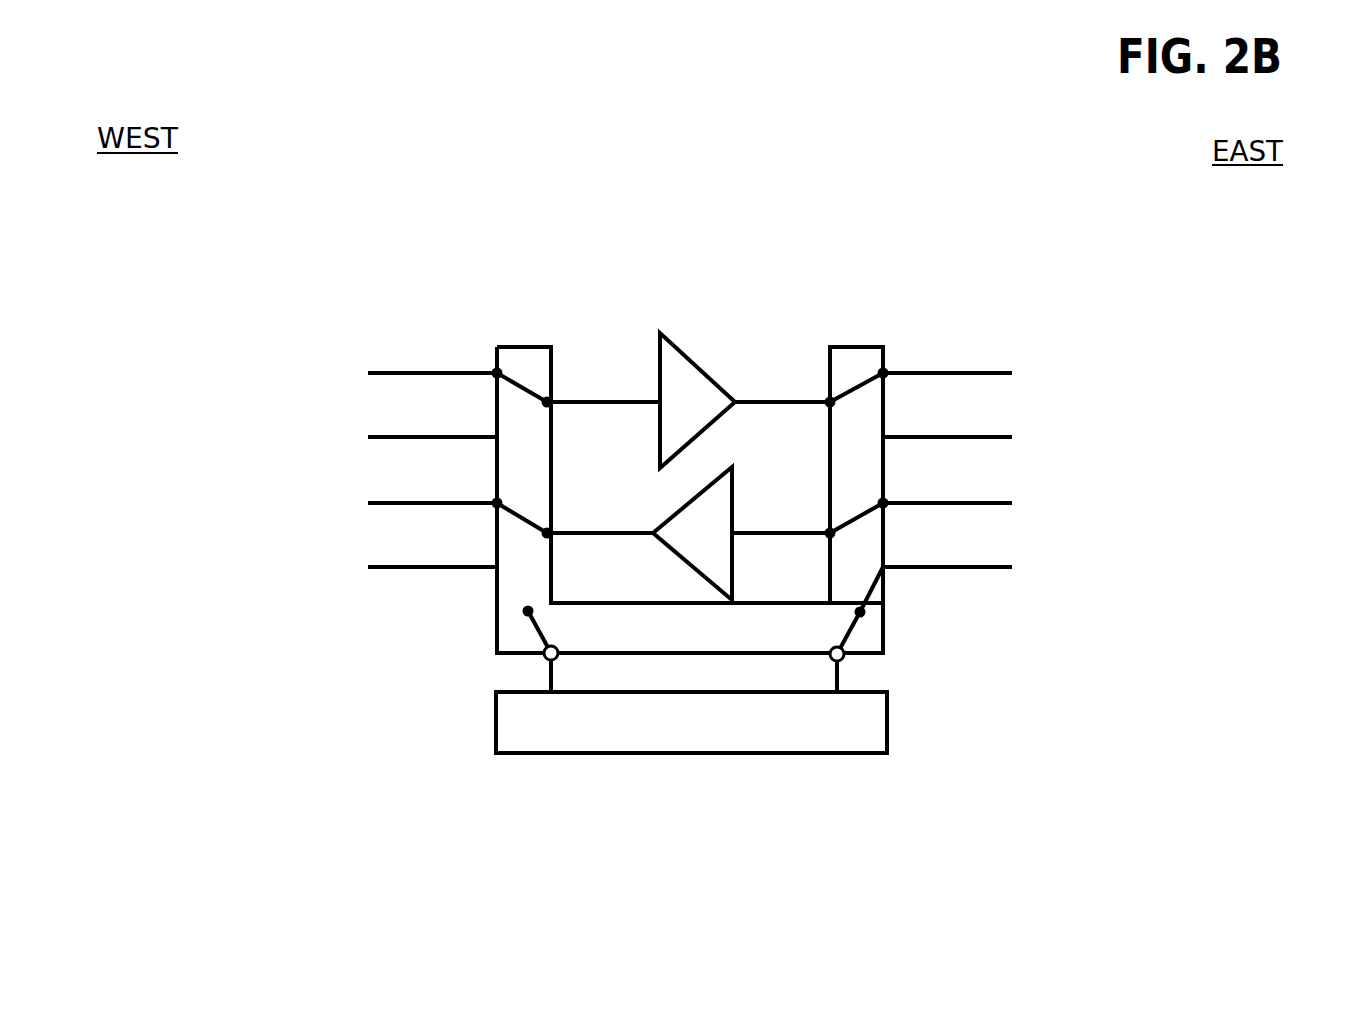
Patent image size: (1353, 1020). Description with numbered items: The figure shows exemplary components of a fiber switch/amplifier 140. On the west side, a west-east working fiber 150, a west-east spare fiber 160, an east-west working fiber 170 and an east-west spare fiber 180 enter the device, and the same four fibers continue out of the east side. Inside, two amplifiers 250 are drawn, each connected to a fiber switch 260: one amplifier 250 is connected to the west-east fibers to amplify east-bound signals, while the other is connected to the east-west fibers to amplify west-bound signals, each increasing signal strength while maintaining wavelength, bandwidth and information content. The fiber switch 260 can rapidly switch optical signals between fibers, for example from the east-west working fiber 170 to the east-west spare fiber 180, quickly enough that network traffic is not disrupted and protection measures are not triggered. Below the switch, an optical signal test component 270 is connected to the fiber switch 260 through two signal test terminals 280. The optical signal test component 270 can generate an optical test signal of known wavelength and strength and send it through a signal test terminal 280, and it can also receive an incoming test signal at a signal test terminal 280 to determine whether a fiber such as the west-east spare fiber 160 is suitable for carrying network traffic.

The fiber switch/amplifier 140 is at (206, 66).
The west-east working fiber 150 is at (365, 373).
The west-east spare fiber 160 is at (365, 433).
The east-west working fiber 170 is at (365, 503).
The east-west spare fiber 180 is at (365, 560).
The amplifier 250 is at (658, 333).
The fiber switch 260 is at (842, 346).
The optical signal test component 270 is at (742, 754).
The signal test terminal 280 is at (862, 614).